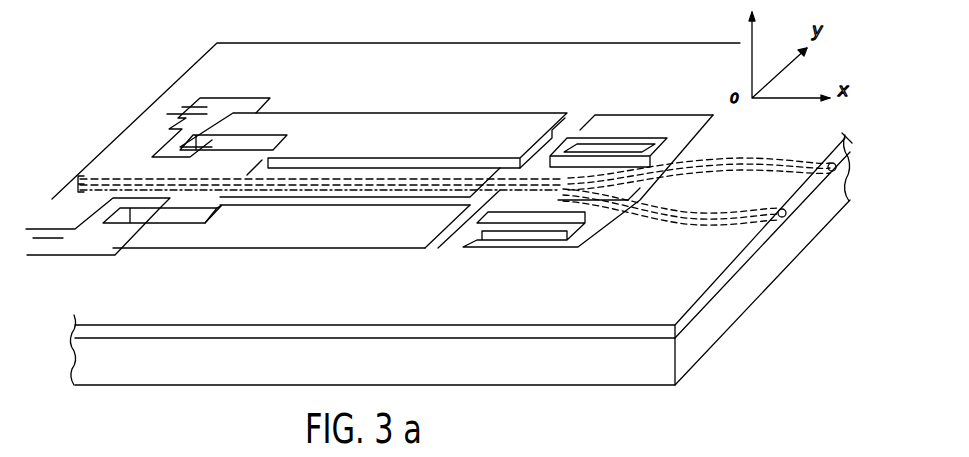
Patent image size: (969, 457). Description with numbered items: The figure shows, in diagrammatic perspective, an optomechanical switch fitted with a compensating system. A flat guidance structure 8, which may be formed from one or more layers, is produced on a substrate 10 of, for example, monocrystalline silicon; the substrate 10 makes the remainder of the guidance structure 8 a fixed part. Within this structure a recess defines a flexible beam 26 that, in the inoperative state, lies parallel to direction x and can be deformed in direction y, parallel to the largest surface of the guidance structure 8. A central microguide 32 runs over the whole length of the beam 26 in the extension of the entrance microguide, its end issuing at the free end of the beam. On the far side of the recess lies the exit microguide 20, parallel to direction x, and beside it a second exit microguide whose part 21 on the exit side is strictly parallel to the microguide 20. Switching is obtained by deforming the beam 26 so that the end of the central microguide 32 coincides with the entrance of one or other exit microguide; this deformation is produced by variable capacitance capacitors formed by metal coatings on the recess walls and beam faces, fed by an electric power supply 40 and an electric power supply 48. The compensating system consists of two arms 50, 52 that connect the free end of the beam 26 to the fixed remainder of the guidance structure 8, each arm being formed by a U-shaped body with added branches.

The guidance structure 8 is at (677, 296).
The substrate 10 is at (688, 348).
The exit microguide 20 is at (788, 163).
The part of exit microguide 21 is at (744, 226).
The flexible beam 26 is at (420, 178).
The central microguide 32 is at (137, 178).
The electric power supply 40 is at (173, 113).
The electric power supply 48 is at (50, 229).
The compensating arm 50 is at (535, 233).
The compensating arm 52 is at (647, 137).